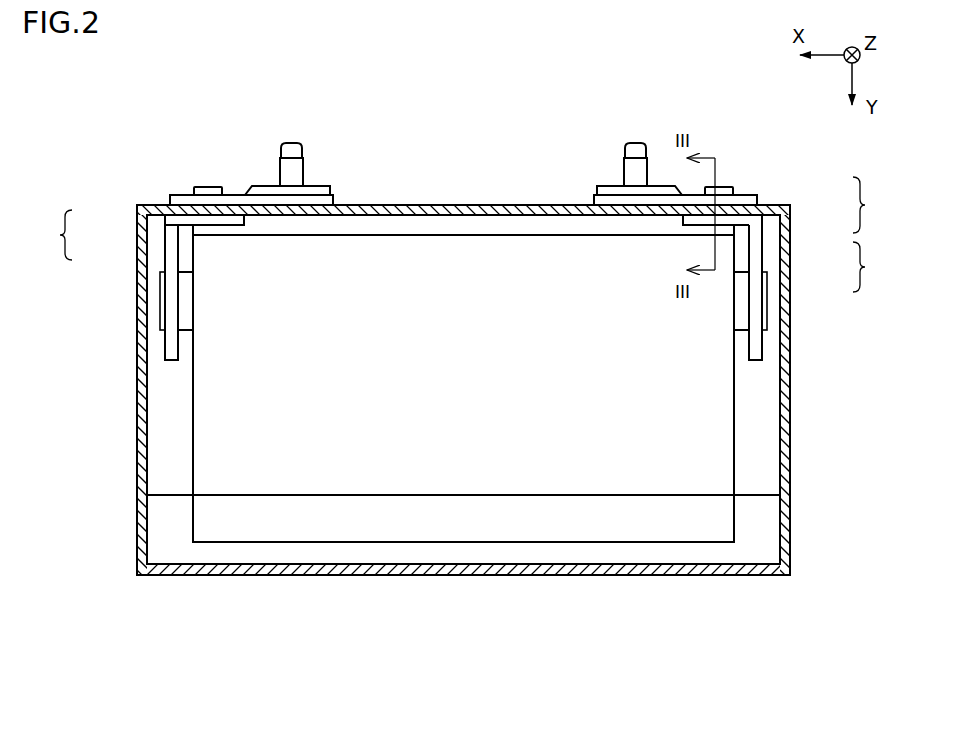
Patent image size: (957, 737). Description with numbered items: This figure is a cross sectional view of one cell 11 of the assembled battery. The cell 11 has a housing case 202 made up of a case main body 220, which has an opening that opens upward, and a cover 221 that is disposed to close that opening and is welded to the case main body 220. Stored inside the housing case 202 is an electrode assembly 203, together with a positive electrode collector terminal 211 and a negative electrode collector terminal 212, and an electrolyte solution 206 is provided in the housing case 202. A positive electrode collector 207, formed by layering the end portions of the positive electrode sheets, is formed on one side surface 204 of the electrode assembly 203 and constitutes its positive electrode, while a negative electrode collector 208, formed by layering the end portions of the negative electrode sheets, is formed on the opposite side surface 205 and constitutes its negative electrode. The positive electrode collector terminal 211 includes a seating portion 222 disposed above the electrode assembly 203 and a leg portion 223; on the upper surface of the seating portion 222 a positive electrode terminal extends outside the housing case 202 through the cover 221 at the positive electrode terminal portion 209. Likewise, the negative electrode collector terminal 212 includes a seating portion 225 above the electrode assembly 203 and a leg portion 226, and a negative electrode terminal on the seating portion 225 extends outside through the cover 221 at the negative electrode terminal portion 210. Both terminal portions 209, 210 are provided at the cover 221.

The cell 11 is at (141, 97).
The housing case 202 is at (879, 205).
The electrode assembly 203 is at (464, 518).
The side surface 204 is at (735, 397).
The side surface 205 is at (192, 433).
The electrolyte solution 206 is at (682, 493).
The positive electrode collector 207 is at (767, 322).
The negative electrode collector 208 is at (163, 318).
The positive electrode terminal portion 209 is at (741, 172).
The negative electrode terminal portion 210 is at (213, 171).
The positive electrode collector terminal 211 is at (879, 267).
The negative electrode collector terminal 212 is at (47, 235).
The case main body 220 is at (766, 224).
The cover 221 is at (757, 203).
The seating portion 222 is at (732, 226).
The leg portion 223 is at (750, 268).
The seating portion 225 is at (184, 231).
The leg portion 226 is at (176, 258).